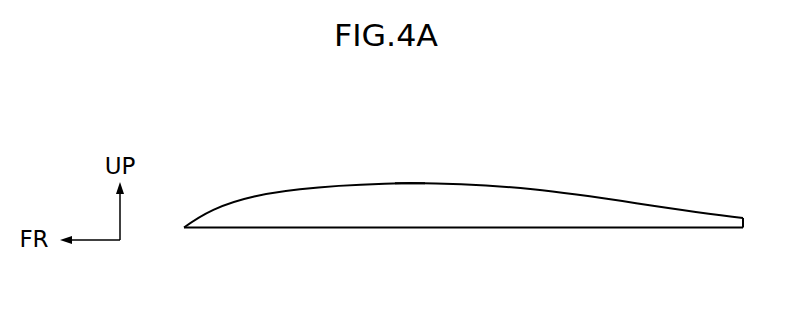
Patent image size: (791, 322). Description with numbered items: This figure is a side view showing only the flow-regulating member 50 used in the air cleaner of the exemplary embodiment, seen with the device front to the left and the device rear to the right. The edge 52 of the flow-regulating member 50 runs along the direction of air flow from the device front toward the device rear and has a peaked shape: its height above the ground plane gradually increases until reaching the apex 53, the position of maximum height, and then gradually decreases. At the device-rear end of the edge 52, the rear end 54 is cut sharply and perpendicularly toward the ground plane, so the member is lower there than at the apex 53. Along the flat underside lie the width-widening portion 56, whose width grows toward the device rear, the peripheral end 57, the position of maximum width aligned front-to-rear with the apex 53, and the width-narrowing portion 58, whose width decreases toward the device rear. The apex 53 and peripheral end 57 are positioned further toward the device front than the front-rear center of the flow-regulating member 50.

The flow-regulating member 50 is at (475, 185).
The edge 52 is at (475, 185).
The apex 53 is at (415, 183).
The rear end 54 is at (745, 217).
The width-widening portion 56 is at (290, 228).
The peripheral end 57 is at (415, 228).
The width-narrowing portion 58 is at (537, 228).